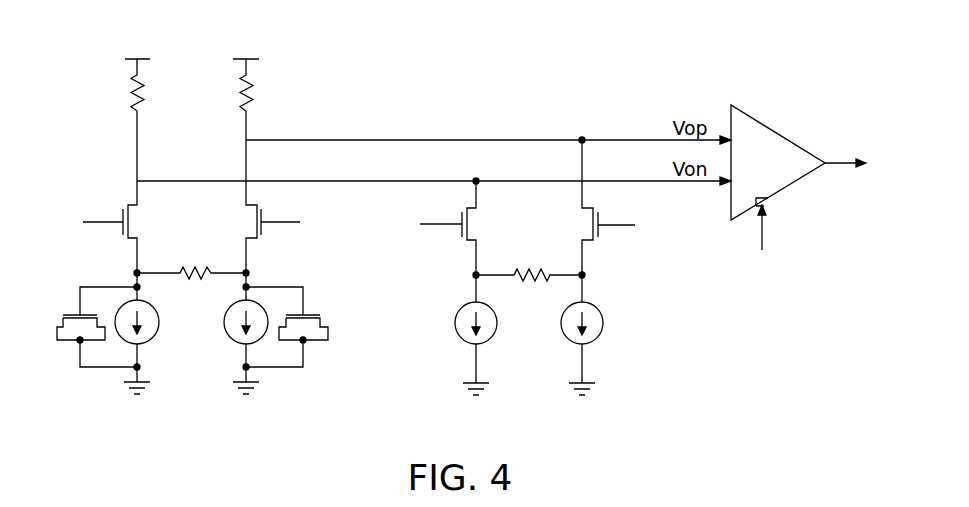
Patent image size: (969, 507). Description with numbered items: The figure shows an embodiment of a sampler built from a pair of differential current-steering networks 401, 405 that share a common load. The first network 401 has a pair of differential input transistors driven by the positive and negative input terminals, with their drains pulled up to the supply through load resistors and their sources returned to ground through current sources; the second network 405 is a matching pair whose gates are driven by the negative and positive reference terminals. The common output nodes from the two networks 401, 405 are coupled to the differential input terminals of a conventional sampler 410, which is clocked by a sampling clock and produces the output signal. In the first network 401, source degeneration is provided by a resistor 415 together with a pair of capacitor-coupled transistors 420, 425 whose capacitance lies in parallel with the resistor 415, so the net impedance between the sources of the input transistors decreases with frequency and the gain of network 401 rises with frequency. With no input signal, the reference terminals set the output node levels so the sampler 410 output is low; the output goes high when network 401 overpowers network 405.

The input differential amplifier stage 401 is at (189, 237).
The differential current-steering network 405 is at (610, 404).
The sampler 410 is at (770, 187).
The resistor 415 is at (187, 270).
The capacitor-coupled transistor 420 is at (71, 313).
The capacitor-coupled transistor 425 is at (310, 313).